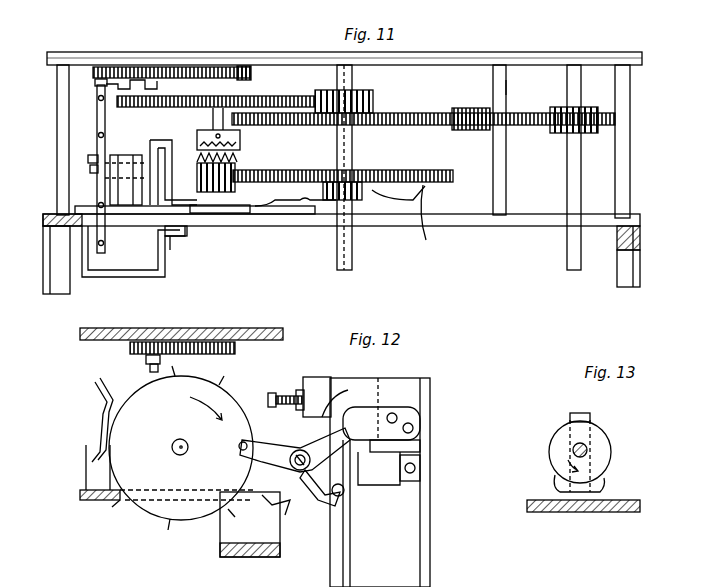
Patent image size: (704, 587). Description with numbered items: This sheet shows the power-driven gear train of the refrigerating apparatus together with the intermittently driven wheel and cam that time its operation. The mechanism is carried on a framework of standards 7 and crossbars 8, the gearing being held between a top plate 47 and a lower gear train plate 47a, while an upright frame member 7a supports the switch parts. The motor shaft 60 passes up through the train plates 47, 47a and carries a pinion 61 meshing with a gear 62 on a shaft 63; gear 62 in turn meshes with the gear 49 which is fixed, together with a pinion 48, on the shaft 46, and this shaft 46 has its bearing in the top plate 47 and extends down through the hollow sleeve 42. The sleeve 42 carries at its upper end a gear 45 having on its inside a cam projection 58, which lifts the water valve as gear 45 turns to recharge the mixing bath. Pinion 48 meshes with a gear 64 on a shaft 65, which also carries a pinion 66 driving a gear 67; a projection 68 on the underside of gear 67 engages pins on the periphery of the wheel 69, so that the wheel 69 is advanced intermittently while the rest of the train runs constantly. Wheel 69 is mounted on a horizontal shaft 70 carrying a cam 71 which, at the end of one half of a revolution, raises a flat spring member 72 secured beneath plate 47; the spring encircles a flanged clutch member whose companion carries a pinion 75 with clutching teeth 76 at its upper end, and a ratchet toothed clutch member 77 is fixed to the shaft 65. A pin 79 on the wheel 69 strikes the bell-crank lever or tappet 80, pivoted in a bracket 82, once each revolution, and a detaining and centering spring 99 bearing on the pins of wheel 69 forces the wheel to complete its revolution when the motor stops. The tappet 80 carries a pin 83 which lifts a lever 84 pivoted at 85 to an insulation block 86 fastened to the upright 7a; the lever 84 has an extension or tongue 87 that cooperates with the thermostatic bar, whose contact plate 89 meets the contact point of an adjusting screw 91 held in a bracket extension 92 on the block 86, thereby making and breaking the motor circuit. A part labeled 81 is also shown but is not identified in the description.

In FIG. 11, the standards 7 is at (50, 290).
In FIG. 12, the upright frame member 7a is at (430, 576).
In FIG. 11, the crossbars 8 is at (45, 233).
In FIG. 11, the hollow shaft or sleeve 42 is at (353, 248).
In FIG. 11, the gear 45 is at (440, 170).
In FIG. 11, the shaft 46 is at (353, 278).
In FIG. 11, the top plate 47 is at (548, 58).
In FIG. 12, the top plate 47 is at (228, 328).
In FIG. 11, the gear train plate 47a is at (536, 227).
In FIG. 12, the gear train plate 47a is at (83, 500).
In FIG. 13, the gear train plate 47a is at (630, 513).
In FIG. 11, the pinion 48 is at (374, 100).
In FIG. 11, the gear 49 is at (396, 125).
In FIG. 11, the cam projection 58 is at (414, 223).
In FIG. 11, the motor shaft 60 is at (567, 176).
In FIG. 11, the pinion 61 is at (598, 120).
In FIG. 11, the gear 62 is at (470, 108).
In FIG. 11, the shaft 63 is at (503, 87).
In FIG. 11, the gear 64 is at (275, 99).
In FIG. 11, the shaft 65 is at (213, 122).
In FIG. 11, the pinion 66 is at (244, 68).
In FIG. 11, the gear 67 is at (180, 67).
In FIG. 12, the gear 67 is at (143, 342).
In FIG. 11, the projection 68 is at (126, 80).
In FIG. 12, the projection 68 is at (146, 362).
In FIG. 11, the wheel 69 is at (97, 110).
In FIG. 12, the wheel 69 is at (156, 508).
In FIG. 11, the shaft 70 is at (127, 155).
In FIG. 12, the shaft 70 is at (173, 452).
In FIG. 13, the shaft 70 is at (588, 448).
In FIG. 11, the cam 71 is at (148, 148).
In FIG. 13, the cam 71 is at (552, 448).
In FIG. 11, the flat spring member 72 is at (183, 236).
In FIG. 13, the flat spring member 72 is at (592, 415).
In FIG. 11, the pinion 75 is at (236, 186).
In FIG. 11, the clutching teeth 76 is at (240, 156).
In FIG. 11, the ratchet toothed clutch member 77 is at (240, 138).
In FIG. 11, the pin 79 is at (88, 159).
In FIG. 12, the pin 79 is at (248, 446).
In FIG. 11, the bell-crank lever 80 is at (92, 172).
In FIG. 12, the bell-crank lever 80 is at (292, 450).
In FIG. 12, the arm 81 is at (381, 423).
In FIG. 12, the bracket 82 is at (302, 506).
In FIG. 12, the pin 83 is at (343, 496).
In FIG. 12, the lever 84 is at (286, 520).
In FIG. 12, the pivot 85 is at (421, 468).
In FIG. 12, the insulation block 86 is at (414, 396).
In FIG. 12, the extension 87 is at (379, 468).
In FIG. 12, the contact plate 89 is at (348, 394).
In FIG. 12, the adjusting screw 91 is at (282, 396).
In FIG. 12, the bracket extension 92 is at (306, 386).
In FIG. 12, the detaining and centering spring 99 is at (96, 418).